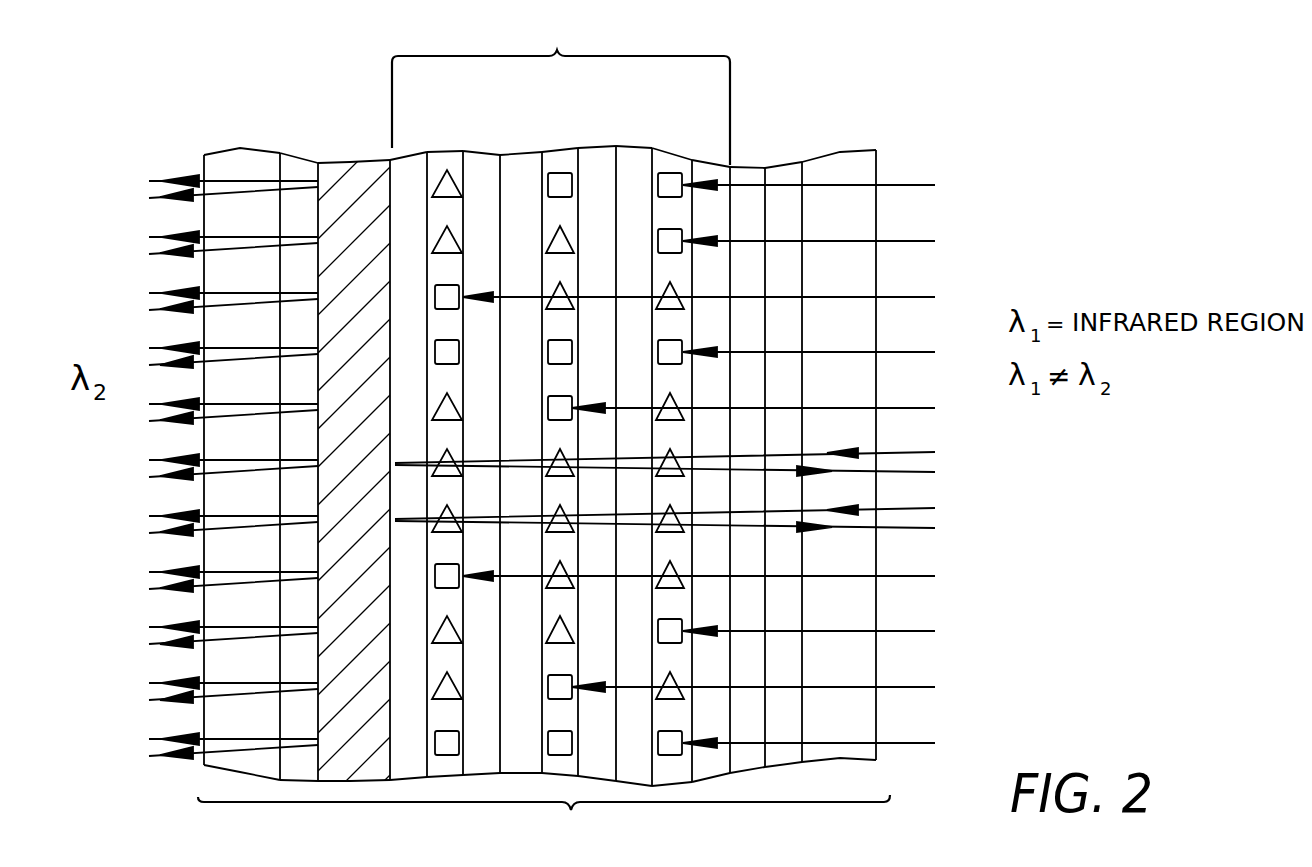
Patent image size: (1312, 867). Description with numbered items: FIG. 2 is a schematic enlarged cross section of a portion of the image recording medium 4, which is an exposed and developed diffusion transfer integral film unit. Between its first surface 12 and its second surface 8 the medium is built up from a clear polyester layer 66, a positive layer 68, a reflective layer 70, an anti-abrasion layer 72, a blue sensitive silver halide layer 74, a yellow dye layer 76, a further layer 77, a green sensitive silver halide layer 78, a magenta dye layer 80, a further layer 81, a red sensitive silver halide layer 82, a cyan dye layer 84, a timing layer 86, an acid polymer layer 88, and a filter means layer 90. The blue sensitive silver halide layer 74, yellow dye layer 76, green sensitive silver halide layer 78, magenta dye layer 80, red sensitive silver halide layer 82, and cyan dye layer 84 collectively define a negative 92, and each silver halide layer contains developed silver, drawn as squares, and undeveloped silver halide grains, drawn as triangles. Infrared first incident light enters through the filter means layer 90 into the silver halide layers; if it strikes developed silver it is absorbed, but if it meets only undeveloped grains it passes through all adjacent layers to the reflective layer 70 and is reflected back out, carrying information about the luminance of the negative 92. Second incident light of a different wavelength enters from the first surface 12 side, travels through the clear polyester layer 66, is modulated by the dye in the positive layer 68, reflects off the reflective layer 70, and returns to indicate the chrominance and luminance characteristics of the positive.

The image recording medium 4 is at (544, 819).
The second surface 8 is at (876, 170).
The first surface 12 is at (204, 160).
The clear polyester layer 66 is at (248, 150).
The positive layer 68 is at (300, 153).
The reflective layer 70 is at (364, 160).
The anti-abrasion layer 72 is at (408, 152).
The blue sensitive silver halide layer 74 is at (445, 150).
The yellow dye layer 76 is at (480, 155).
The spacer layer 77 is at (523, 150).
The green sensitive silver halide layer 78 is at (553, 153).
The magenta dye layer 80 is at (597, 150).
The spacer layer 81 is at (628, 150).
The red sensitive silver halide layer 82 is at (667, 150).
The cyan dye layer 84 is at (711, 160).
The timing layer 86 is at (745, 165).
The acid polymer layer 88 is at (785, 165).
The filter means layer 90 is at (850, 152).
The negative 92 is at (561, 93).